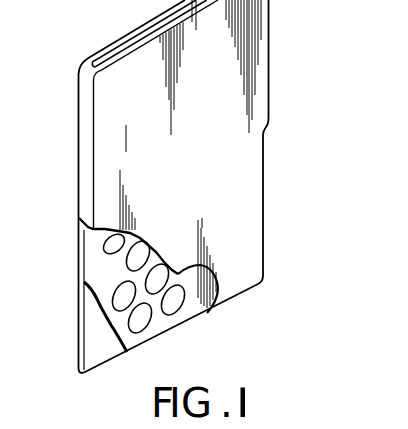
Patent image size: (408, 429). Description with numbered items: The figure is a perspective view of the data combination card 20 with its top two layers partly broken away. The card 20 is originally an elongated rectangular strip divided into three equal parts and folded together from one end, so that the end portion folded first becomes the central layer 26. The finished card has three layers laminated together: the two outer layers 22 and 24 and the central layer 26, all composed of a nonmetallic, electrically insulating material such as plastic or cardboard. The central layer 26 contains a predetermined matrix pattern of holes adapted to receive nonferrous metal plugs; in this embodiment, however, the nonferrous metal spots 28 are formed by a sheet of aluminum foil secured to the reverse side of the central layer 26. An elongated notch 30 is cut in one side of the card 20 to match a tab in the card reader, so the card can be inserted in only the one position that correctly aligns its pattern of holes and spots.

The card 20 is at (174, 186).
The outer layer 22 is at (250, 250).
The outer layer 24 is at (102, 346).
The central layer 26 is at (95, 256).
The nonferrous metal spots 28 is at (209, 311).
The elongated notch 30 is at (264, 130).